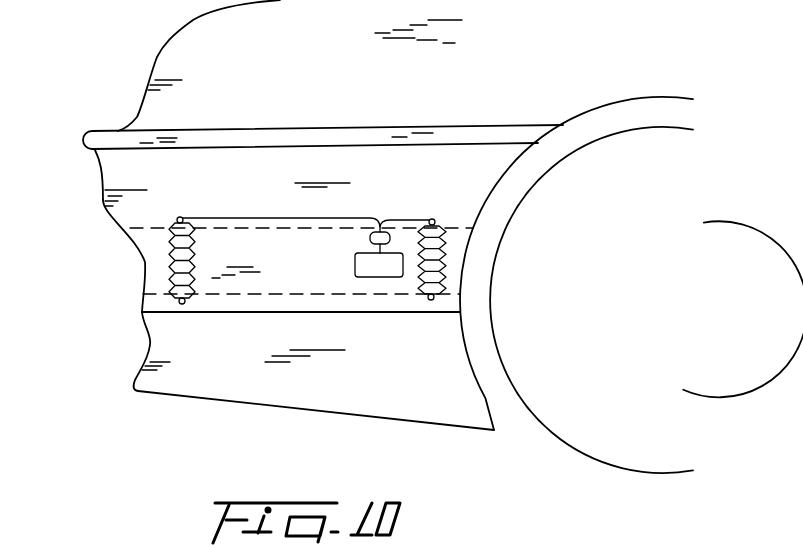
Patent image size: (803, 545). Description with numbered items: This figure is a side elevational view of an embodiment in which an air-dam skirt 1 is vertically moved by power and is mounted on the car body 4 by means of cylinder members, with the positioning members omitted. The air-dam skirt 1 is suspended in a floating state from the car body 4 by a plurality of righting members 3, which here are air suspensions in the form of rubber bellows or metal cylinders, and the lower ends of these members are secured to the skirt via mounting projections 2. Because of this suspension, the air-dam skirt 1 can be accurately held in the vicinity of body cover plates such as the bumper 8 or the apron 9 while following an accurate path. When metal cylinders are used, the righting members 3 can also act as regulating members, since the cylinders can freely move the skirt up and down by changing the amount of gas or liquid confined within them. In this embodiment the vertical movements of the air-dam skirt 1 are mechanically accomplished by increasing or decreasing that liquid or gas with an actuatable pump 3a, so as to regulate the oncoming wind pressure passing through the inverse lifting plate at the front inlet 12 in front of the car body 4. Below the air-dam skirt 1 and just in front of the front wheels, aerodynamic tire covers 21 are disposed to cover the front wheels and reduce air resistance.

The air-dam skirt 1 is at (187, 380).
The mounting projections 2 is at (182, 305).
The righting members 3 is at (195, 230).
The actuatable pump 3a is at (365, 270).
The car body 4 is at (455, 177).
The bumper 8 is at (103, 203).
The apron 9 is at (145, 268).
The front inlet 12 is at (148, 353).
The aerodynamic tire covers 21 is at (460, 410).